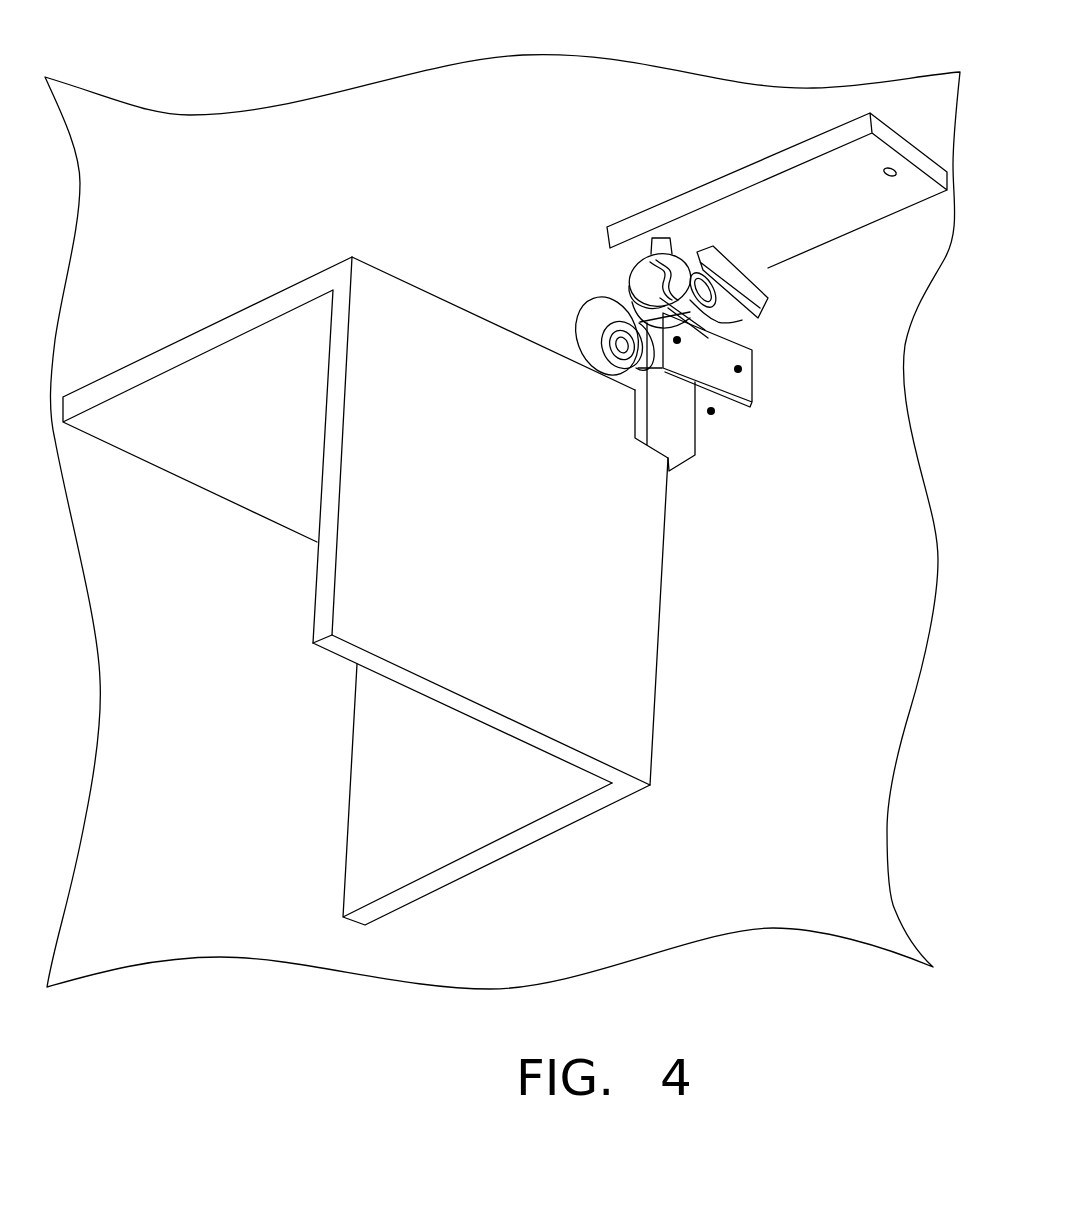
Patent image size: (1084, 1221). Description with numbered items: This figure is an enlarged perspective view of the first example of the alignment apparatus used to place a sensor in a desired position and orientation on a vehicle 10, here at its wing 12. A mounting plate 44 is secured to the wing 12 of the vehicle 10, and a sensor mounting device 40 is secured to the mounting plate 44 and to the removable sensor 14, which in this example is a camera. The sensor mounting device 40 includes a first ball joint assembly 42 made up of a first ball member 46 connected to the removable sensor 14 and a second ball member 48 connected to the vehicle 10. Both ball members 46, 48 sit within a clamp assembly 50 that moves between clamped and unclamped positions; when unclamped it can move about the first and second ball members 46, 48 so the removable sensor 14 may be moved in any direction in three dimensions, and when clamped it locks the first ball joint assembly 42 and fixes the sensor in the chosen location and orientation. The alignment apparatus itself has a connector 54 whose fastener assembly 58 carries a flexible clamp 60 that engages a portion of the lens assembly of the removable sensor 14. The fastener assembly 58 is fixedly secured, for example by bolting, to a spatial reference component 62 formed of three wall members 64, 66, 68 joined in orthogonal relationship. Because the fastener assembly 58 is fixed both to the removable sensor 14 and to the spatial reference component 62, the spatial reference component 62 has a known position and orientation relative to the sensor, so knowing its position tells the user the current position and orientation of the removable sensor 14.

The vehicle 10 is at (693, 258).
The wing 12 is at (256, 187).
The removable sensor 14 is at (717, 375).
The sensor mounting device 40 is at (728, 321).
The first ball joint assembly 42 is at (617, 270).
The mounting plate 44 is at (767, 170).
The first ball member 46 is at (737, 338).
The second ball member 48 is at (647, 264).
The clamp assembly 50 is at (683, 252).
The connector 54 is at (678, 428).
The fastener assembly 58 is at (657, 413).
The flexible clamp 60 is at (615, 350).
The spatial reference component 62 is at (404, 591).
The wall member 64 is at (482, 826).
The wall member 66 is at (603, 572).
The wall member 68 is at (226, 376).